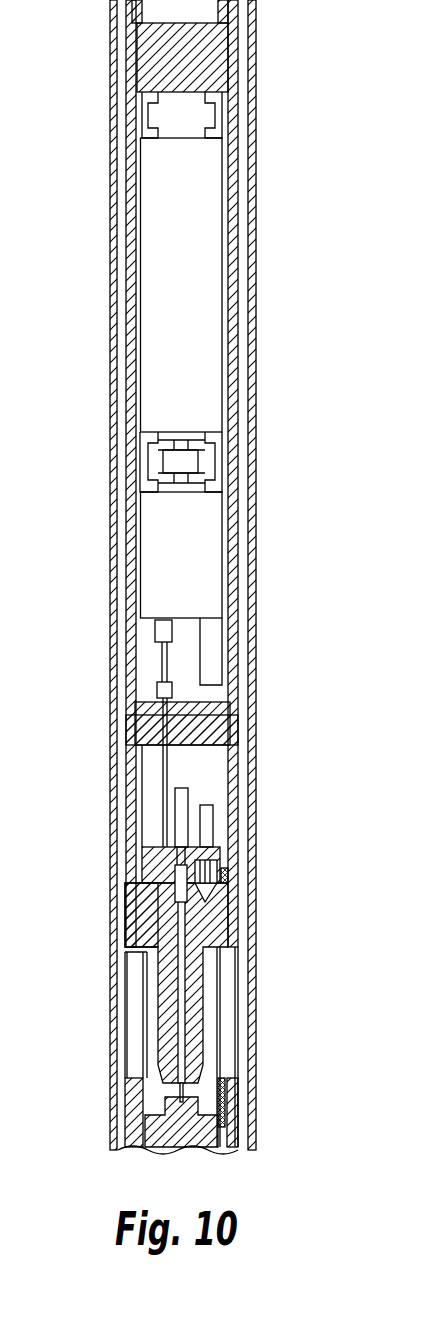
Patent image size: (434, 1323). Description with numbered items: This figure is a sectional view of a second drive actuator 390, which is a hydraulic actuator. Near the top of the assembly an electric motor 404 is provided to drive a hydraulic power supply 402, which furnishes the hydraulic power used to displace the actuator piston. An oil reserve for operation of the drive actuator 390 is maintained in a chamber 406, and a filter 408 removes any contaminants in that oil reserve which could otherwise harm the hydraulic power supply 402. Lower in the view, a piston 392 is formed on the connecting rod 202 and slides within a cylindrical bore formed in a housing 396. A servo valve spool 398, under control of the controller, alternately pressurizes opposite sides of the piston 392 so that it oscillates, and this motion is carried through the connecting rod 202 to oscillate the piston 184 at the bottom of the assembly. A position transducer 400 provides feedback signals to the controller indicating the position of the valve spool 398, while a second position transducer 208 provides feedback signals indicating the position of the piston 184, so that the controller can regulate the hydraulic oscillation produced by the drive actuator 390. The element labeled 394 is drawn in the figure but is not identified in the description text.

The second drive actuator 390 is at (294, 308).
The electric motor 404 is at (208, 218).
The hydraulic power supply 402 is at (222, 556).
The chamber 406 is at (222, 633).
The filter 408 is at (222, 665).
The position transducer 208 is at (188, 797).
The position transducer 400 is at (213, 815).
The servo valve spool 398 is at (230, 870).
The housing 396 is at (233, 883).
The block 394 is at (143, 880).
The piston 392 is at (140, 908).
The connecting rod 202 is at (190, 965).
The piston 184 is at (223, 1123).